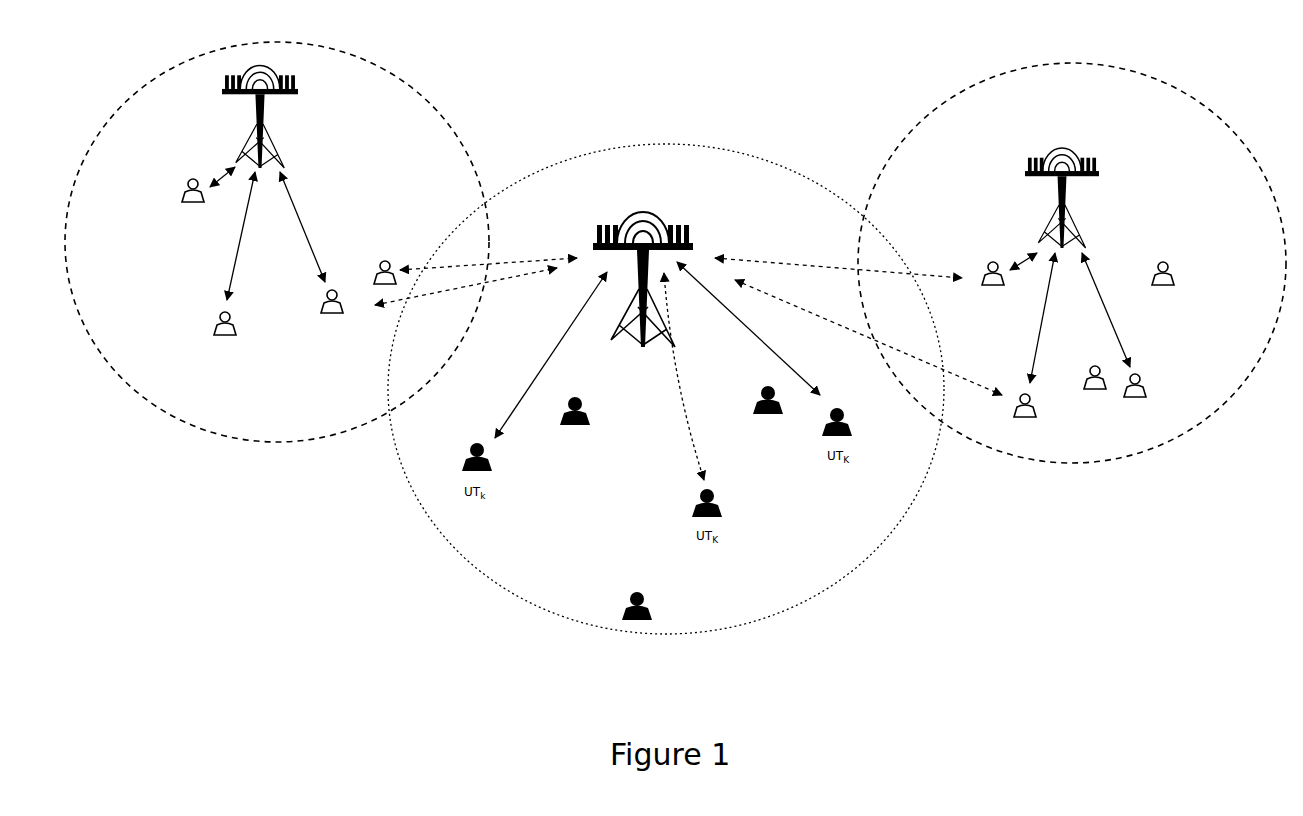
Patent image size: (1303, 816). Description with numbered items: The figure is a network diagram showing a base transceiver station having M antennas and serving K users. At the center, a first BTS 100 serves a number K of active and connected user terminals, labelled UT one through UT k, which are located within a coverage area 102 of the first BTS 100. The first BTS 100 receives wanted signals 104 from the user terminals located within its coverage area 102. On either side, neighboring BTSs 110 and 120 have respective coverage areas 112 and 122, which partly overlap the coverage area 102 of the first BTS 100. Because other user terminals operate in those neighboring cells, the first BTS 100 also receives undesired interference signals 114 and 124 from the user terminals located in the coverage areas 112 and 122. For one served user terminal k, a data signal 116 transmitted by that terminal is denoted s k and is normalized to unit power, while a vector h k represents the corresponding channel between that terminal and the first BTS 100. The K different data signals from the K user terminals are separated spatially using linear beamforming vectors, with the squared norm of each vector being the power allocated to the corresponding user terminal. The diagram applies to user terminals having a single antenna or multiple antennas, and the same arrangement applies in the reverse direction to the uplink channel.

The first BTS 100 is at (655, 215).
The coverage area 102 is at (877, 543).
The wanted signals 104 is at (556, 352).
The neighboring BTS 110 is at (273, 73).
The coverage area 112 is at (386, 76).
The undesired interference signals 114 is at (460, 267).
The data signal 116 is at (685, 383).
The neighboring BTS 120 is at (1068, 150).
The coverage area 122 is at (1200, 104).
The undesired interference signals 124 is at (938, 273).